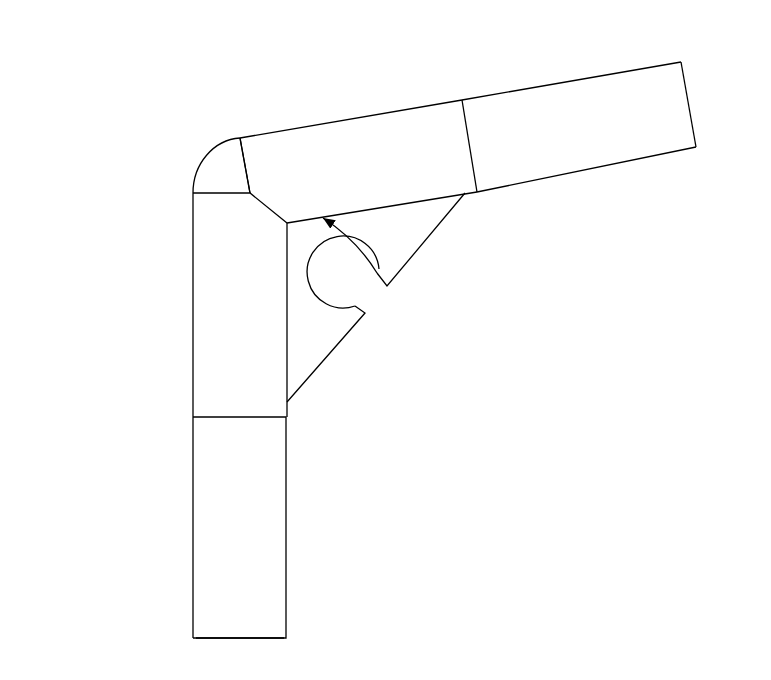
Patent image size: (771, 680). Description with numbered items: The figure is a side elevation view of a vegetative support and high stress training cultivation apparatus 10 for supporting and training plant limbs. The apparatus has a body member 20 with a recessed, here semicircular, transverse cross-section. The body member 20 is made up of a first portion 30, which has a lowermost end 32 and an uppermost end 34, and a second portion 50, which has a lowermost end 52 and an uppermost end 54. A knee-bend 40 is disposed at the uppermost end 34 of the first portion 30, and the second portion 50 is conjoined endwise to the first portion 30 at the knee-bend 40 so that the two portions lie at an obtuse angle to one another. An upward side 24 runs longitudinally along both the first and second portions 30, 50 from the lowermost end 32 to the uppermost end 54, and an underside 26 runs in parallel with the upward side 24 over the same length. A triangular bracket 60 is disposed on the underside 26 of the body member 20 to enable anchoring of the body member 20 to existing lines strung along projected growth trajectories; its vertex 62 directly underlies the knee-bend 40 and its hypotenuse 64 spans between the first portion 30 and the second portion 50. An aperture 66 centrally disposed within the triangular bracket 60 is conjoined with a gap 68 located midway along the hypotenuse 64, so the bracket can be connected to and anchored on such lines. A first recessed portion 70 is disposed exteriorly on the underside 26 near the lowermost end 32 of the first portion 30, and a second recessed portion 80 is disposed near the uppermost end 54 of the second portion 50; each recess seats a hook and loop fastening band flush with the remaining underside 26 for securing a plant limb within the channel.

The vegetative support and high stress training cultivation apparatus 10 is at (90, 143).
The body member 20 is at (113, 262).
The upward side 24 is at (515, 73).
The underside 26 is at (495, 193).
The first portion 30 is at (120, 518).
The lowermost end 32 is at (237, 640).
The uppermost end 34 is at (193, 225).
The knee-bend 40 is at (210, 162).
The second portion 50 is at (358, 112).
The lowermost end 52 is at (255, 133).
The uppermost end 54 is at (688, 92).
The triangular bracket 60 is at (300, 370).
The vertex 62 is at (392, 281).
The hypotenuse 64 is at (337, 342).
The aperture 66 is at (326, 290).
The gap 68 is at (380, 303).
The first recessed portion 70 is at (219, 549).
The second recessed portion 80 is at (556, 141).